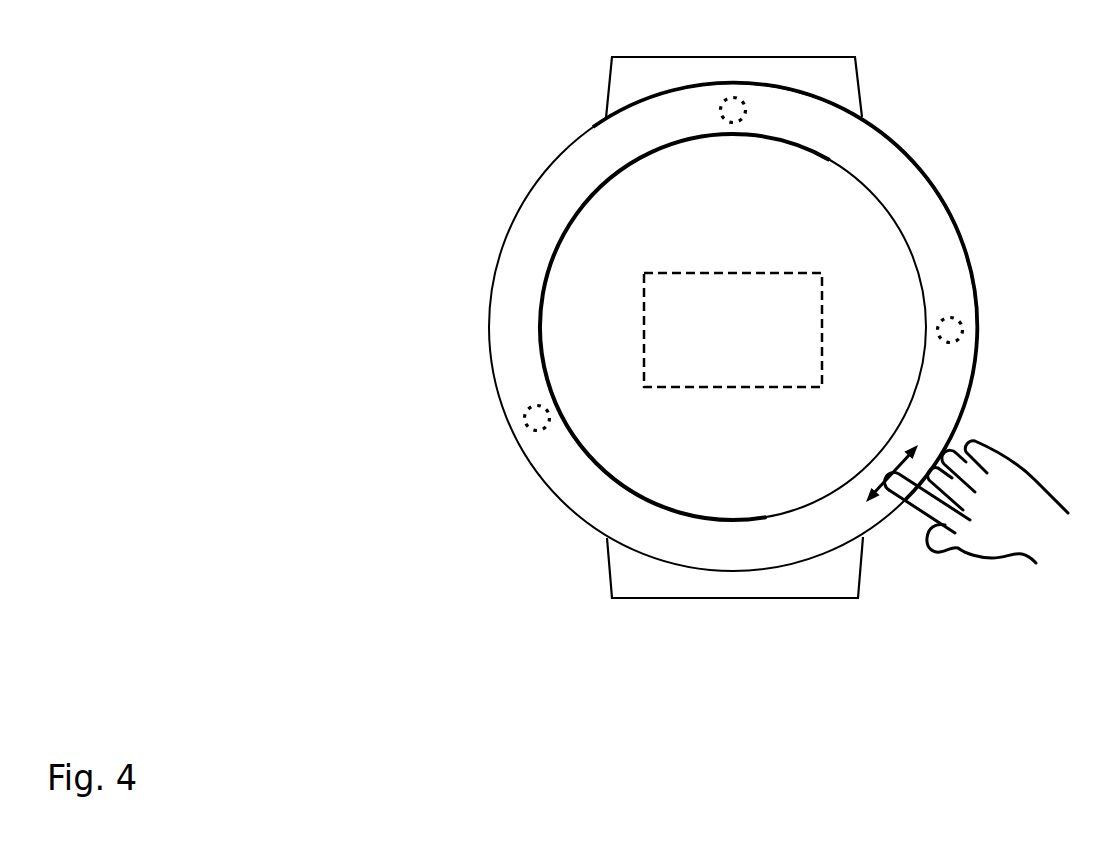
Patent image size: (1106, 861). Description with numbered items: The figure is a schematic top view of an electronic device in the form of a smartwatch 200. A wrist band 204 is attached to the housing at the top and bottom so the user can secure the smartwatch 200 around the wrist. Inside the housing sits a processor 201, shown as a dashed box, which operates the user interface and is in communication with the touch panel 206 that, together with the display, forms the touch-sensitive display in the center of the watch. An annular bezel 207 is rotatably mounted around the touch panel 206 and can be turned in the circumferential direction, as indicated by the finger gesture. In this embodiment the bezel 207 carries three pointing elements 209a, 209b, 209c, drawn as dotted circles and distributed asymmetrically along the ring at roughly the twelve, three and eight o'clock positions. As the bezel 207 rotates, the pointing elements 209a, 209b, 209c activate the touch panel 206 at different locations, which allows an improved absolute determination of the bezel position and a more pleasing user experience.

The smartwatch 200 is at (488, 118).
The processor 201 is at (760, 346).
The wrist band 204 is at (853, 77).
The touch panel 206 is at (623, 418).
The bezel 207 is at (520, 268).
The pointing element 209a is at (517, 420).
The pointing element 209b is at (740, 122).
The pointing element 209c is at (962, 335).